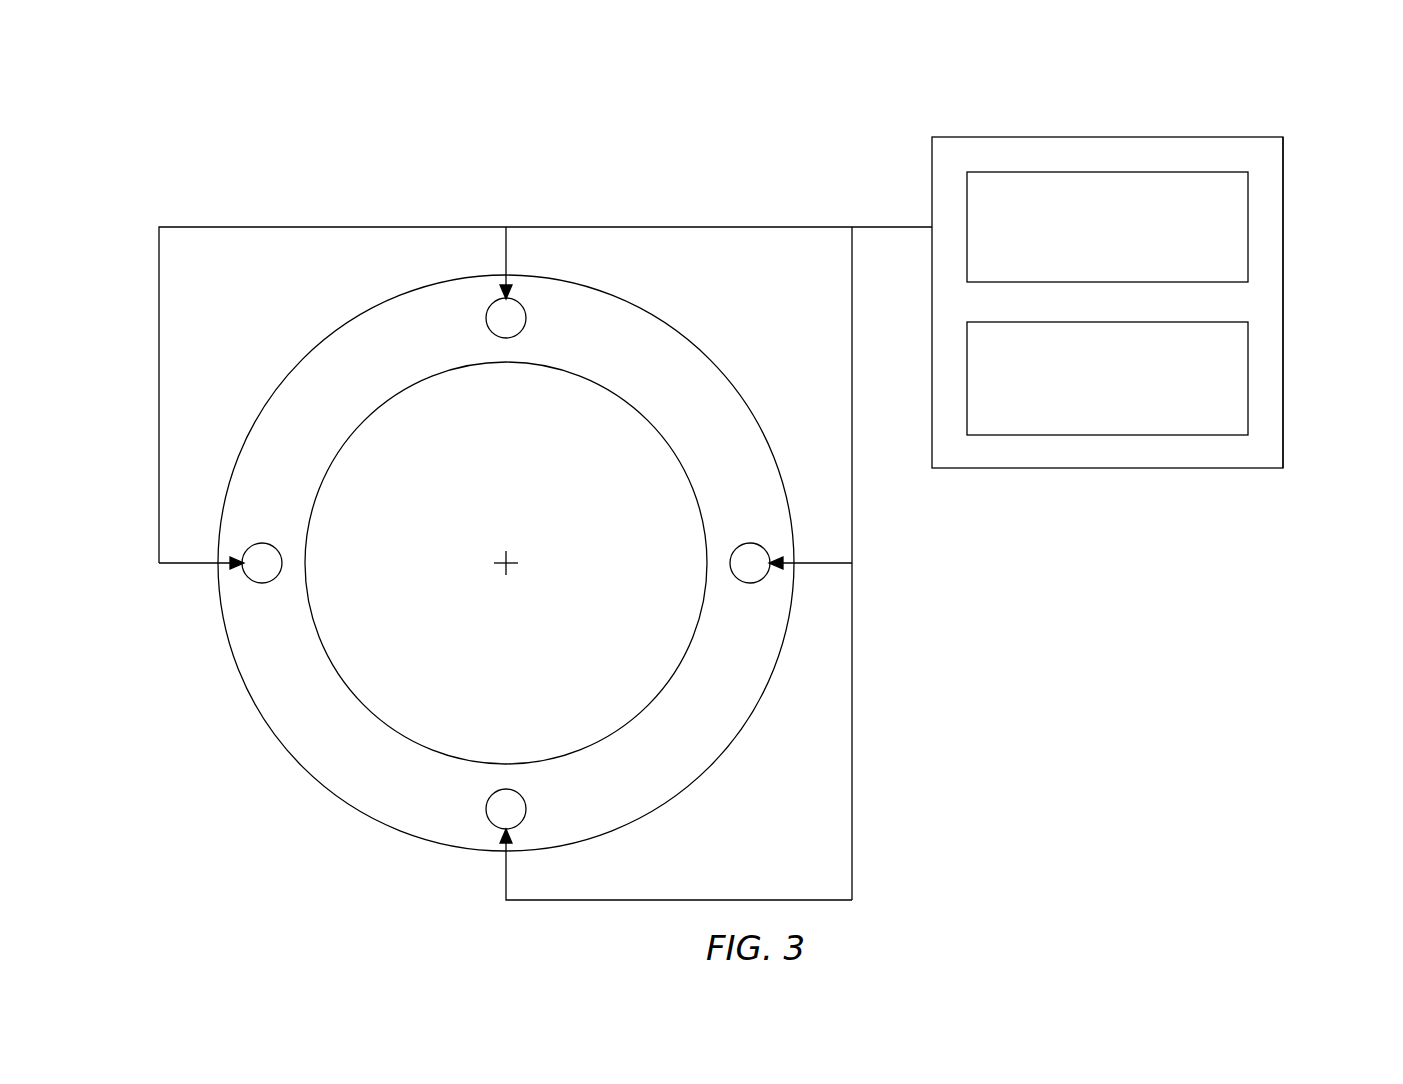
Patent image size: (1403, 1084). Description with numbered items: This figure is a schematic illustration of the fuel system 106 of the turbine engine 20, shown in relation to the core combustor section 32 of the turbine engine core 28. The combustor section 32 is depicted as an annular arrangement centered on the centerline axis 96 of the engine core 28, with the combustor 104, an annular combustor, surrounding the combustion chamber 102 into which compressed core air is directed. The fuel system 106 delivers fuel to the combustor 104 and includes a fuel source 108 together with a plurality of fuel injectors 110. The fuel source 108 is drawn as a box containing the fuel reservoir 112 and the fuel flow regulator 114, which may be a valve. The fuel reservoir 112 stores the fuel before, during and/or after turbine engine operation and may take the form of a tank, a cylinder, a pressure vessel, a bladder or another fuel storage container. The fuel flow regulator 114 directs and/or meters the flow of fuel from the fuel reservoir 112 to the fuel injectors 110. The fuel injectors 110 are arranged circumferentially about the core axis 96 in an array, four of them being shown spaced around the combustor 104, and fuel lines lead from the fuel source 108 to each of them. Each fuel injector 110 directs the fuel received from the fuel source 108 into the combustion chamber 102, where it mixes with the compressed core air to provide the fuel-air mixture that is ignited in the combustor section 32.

The turbine engine 20 is at (172, 104).
The turbine engine core 28 is at (300, 178).
The core combustor section 32 is at (700, 312).
The centerline axis 96 is at (507, 567).
The combustion chamber 102 is at (693, 405).
The combustor 104 is at (715, 362).
The fuel system 106 is at (1276, 118).
The fuel source 108 is at (1297, 188).
The fuel injectors 110 is at (527, 318).
The fuel reservoir 112 is at (1127, 409).
The fuel flow regulator 114 is at (1127, 257).